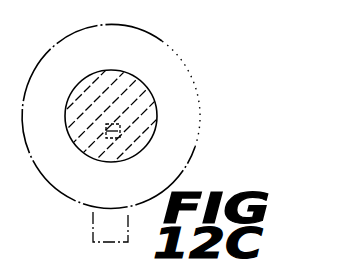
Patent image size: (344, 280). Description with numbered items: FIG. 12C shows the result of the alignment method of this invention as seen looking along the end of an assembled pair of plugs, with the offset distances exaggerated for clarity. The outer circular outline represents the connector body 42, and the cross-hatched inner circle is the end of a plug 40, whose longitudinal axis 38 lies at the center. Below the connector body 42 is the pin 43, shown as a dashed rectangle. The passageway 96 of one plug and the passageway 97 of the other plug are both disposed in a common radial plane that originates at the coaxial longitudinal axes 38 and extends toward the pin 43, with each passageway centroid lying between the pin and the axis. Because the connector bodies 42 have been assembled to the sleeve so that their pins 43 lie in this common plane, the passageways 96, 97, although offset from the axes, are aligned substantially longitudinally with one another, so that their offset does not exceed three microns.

The connector body 42 is at (165, 41).
The plug 40 is at (127, 73).
The longitudinal axis 38 is at (111, 116).
The passageway 96 is at (100, 134).
The passageway 97 is at (139, 135).
The pin 43 is at (93, 210).